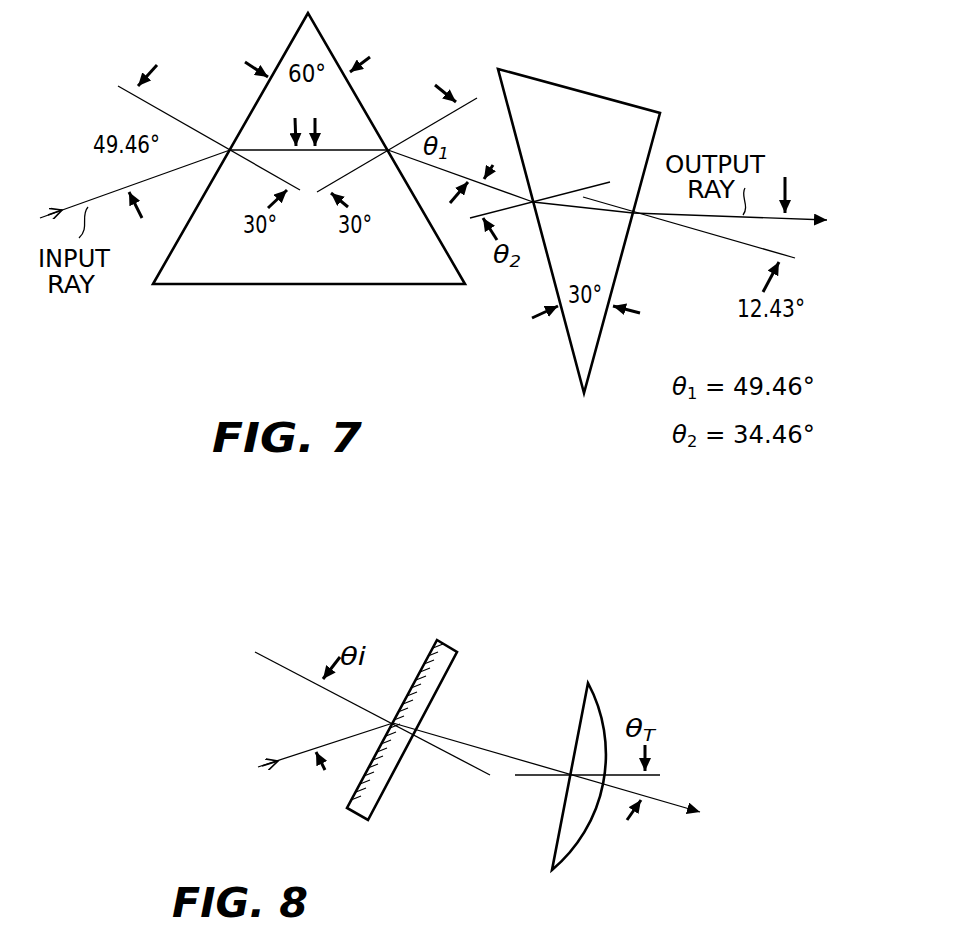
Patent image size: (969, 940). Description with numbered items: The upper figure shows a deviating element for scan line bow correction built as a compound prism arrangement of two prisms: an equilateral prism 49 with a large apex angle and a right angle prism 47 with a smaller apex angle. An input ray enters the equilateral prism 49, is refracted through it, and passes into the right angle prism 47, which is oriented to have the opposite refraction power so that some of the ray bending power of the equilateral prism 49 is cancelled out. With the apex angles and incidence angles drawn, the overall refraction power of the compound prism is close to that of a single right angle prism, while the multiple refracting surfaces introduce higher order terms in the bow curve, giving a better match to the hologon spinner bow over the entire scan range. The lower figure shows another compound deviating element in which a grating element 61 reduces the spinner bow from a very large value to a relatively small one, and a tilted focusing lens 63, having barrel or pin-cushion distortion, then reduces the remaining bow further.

In FIG. 7, the equilateral prism 49 is at (320, 32).
In FIG. 7, the right angle prism 47 is at (660, 129).
In FIG. 8, the grating element 61 is at (448, 670).
In FIG. 8, the tilted focusing lens 63 is at (577, 837).